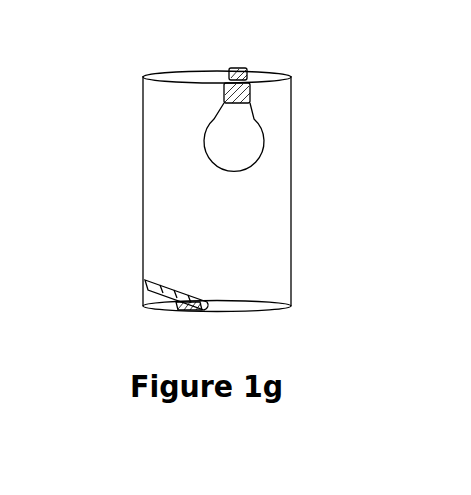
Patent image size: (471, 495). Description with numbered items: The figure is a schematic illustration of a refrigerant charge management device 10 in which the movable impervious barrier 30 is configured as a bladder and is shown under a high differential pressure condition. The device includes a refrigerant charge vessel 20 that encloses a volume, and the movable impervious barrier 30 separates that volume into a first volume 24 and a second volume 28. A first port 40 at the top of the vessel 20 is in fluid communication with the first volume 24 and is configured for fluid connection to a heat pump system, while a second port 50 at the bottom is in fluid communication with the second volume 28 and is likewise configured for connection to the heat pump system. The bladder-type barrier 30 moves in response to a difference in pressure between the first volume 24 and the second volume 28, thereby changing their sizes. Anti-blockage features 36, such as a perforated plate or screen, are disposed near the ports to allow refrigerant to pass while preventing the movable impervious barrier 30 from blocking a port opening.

The charge management device 10 is at (130, 70).
The refrigerant charge vessel 20 is at (143, 92).
The first volume 24 is at (249, 141).
The second volume 28 is at (236, 251).
The movable impervious barrier 30 is at (266, 150).
The anti-blockage feature 36 is at (252, 100).
The first port 40 is at (246, 70).
The second port 50 is at (168, 312).